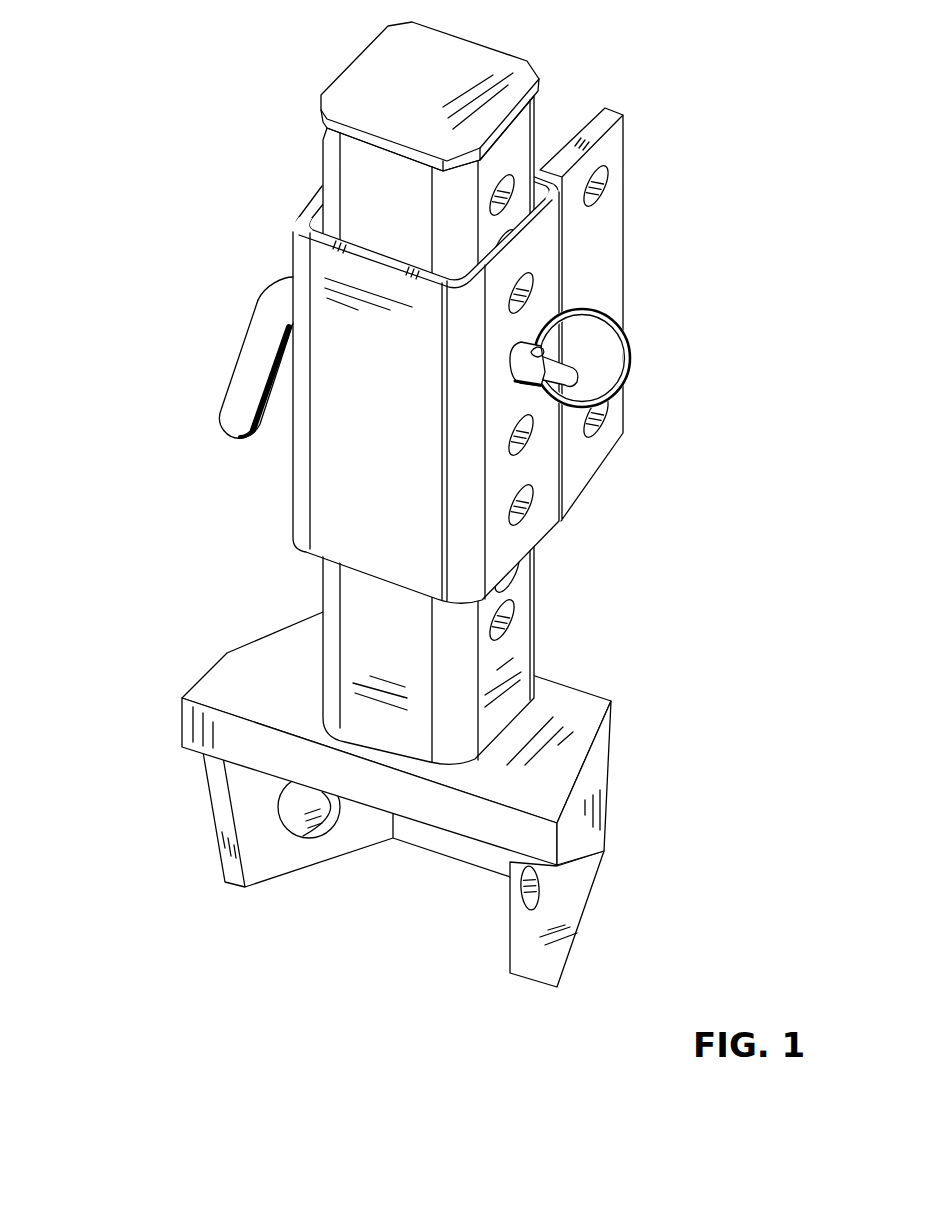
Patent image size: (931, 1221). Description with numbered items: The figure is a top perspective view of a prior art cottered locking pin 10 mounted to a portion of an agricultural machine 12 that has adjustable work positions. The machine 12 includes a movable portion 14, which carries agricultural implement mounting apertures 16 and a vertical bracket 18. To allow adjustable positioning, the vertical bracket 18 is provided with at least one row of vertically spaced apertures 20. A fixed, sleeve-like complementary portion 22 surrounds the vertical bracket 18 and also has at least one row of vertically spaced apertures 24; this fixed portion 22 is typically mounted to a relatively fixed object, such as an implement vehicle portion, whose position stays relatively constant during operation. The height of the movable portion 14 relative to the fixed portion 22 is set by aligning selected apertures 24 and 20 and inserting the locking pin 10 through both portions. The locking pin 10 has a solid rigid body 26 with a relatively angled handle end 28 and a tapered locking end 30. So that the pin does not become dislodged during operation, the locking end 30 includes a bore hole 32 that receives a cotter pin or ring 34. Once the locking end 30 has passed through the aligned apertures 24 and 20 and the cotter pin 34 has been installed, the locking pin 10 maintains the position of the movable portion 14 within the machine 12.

The locking pin 10 is at (205, 368).
The agricultural machine 12 is at (270, 592).
The movable portion 14 is at (165, 724).
The agricultural implement mounting apertures 16 is at (300, 828).
The vertical bracket 18 is at (517, 642).
The vertically spaced apertures 20 is at (510, 170).
The fixed portion 22 is at (570, 519).
The vertically spaced apertures 24 is at (533, 270).
The solid rigid body 26 is at (233, 407).
The angled handle end 28 is at (250, 317).
The tapered locking end 30 is at (623, 377).
The bore hole 32 is at (630, 346).
The cotter pin 34 is at (610, 310).